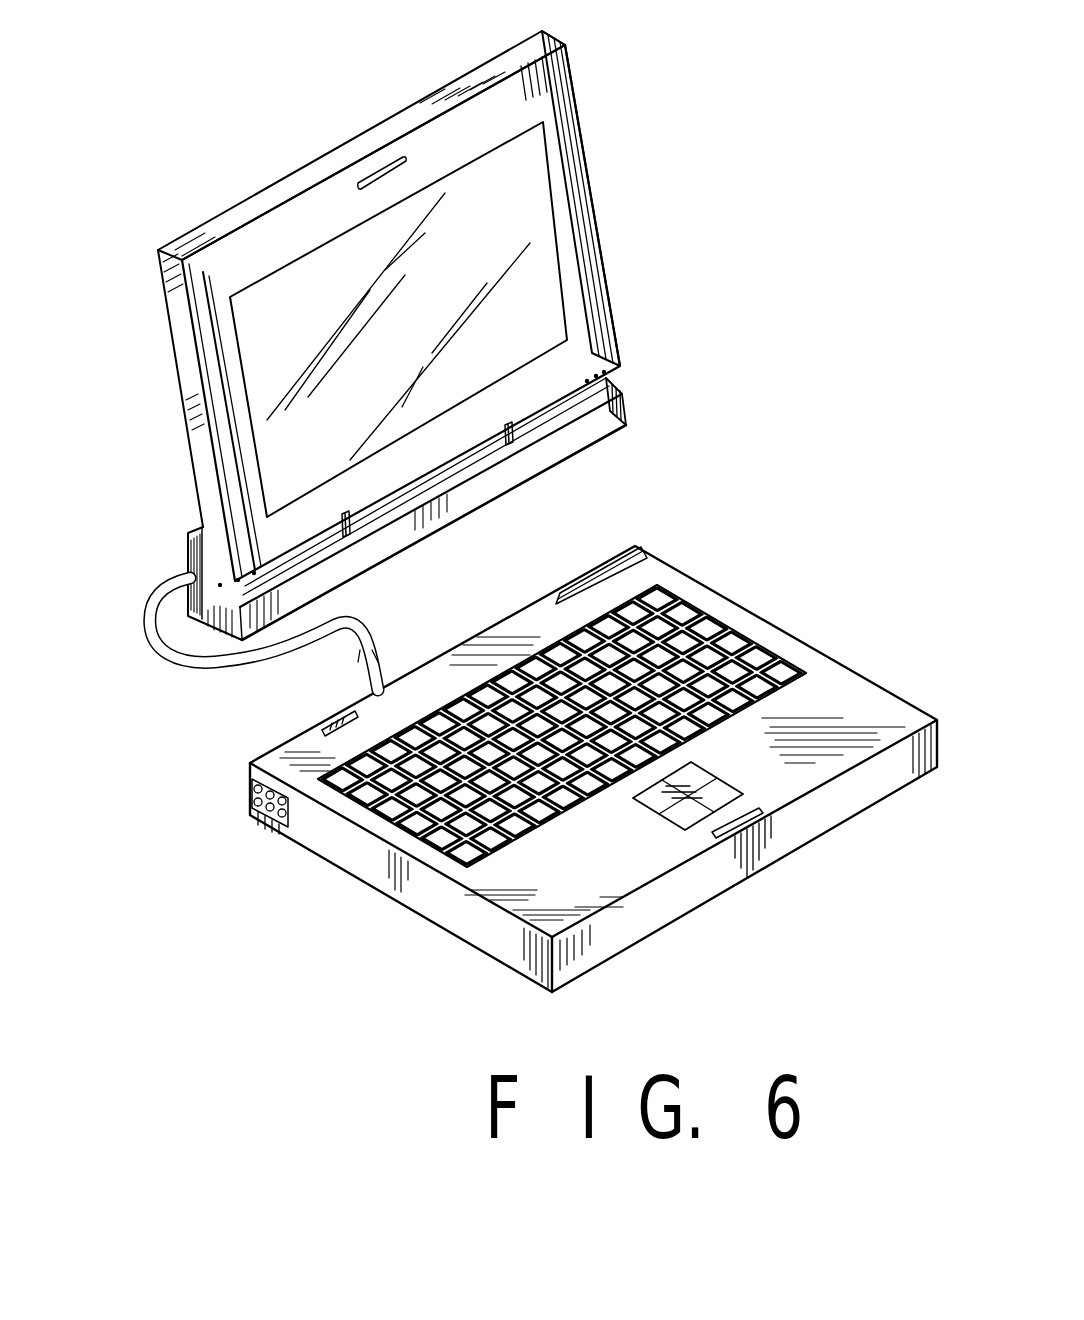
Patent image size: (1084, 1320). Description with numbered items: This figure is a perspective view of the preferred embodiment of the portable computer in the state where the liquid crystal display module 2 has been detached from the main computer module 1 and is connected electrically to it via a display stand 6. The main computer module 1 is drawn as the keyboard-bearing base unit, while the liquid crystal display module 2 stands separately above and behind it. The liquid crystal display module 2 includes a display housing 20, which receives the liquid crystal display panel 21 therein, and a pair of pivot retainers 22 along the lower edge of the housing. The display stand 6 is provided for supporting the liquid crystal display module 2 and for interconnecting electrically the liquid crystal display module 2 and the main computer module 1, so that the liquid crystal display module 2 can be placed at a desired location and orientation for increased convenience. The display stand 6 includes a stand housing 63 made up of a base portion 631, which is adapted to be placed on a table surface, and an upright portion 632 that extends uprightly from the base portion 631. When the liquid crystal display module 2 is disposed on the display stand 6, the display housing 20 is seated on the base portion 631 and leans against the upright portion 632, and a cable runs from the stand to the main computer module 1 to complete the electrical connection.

The main computer module 1 is at (828, 606).
The liquid crystal display module 2 is at (450, 333).
The display housing 20 is at (568, 164).
The liquid crystal display panel 21 is at (517, 340).
The pivot retainers 22 is at (322, 557).
The display stand 6 is at (431, 562).
The stand housing 63 is at (627, 410).
The base portion 631 is at (210, 670).
The upright portion 632 is at (188, 540).